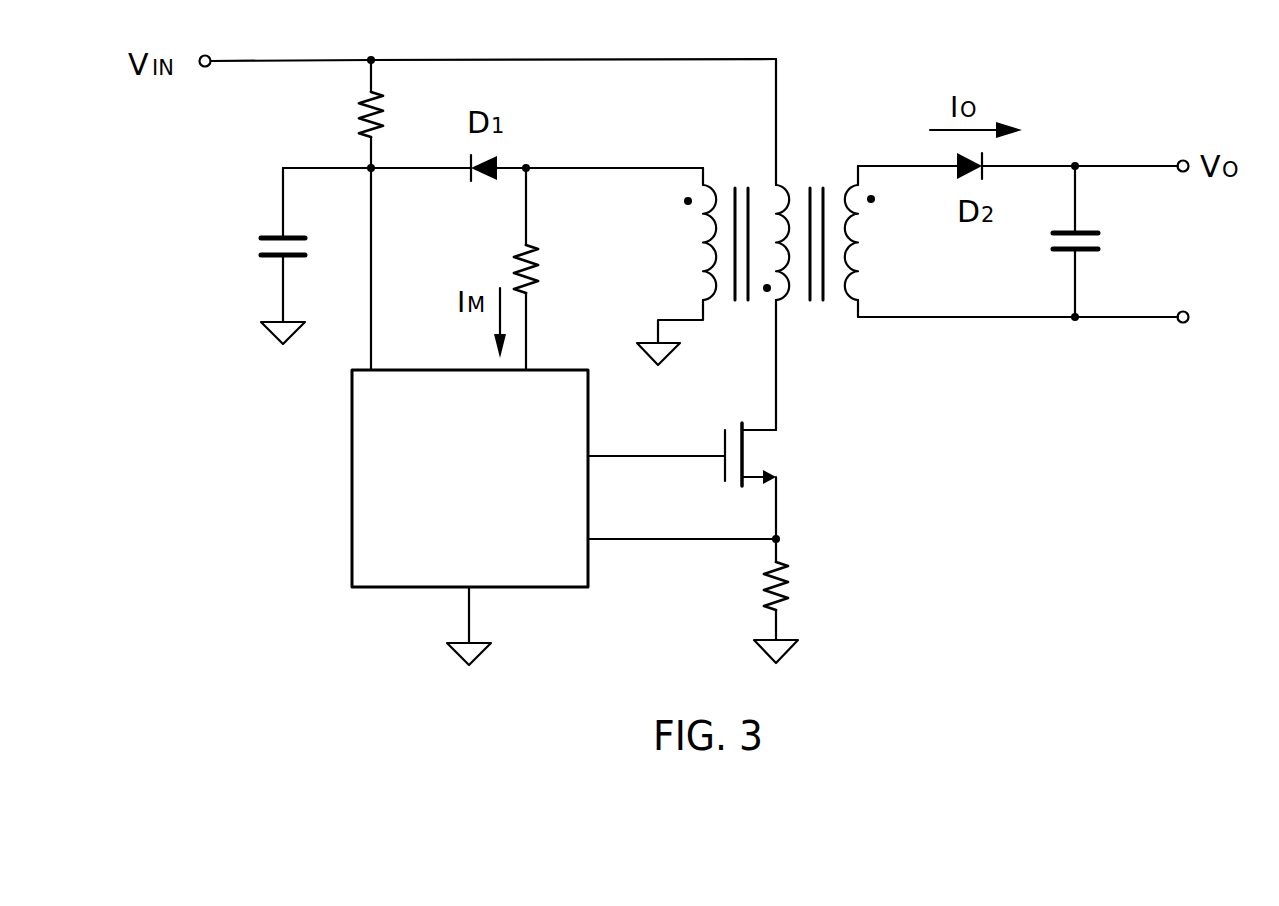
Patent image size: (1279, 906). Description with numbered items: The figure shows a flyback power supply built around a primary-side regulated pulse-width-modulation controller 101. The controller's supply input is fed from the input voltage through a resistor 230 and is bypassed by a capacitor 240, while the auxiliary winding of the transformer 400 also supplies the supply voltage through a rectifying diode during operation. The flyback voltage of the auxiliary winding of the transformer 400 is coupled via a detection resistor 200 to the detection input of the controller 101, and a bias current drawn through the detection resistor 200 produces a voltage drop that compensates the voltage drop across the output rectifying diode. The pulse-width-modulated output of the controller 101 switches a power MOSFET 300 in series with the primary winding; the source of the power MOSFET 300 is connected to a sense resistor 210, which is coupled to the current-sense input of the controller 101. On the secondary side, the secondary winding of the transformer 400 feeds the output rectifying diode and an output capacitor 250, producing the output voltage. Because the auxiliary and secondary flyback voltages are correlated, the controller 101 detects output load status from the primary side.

The PWM controller 101 is at (352, 462).
The detection resistor 200 is at (508, 257).
The sense resistor 210 is at (803, 590).
The input resistor RIN 230 is at (350, 120).
The supply capacitor 240 is at (257, 257).
The output capacitor 250 is at (1110, 242).
The power MOSFET 300 is at (787, 447).
The transformer 400 is at (810, 160).